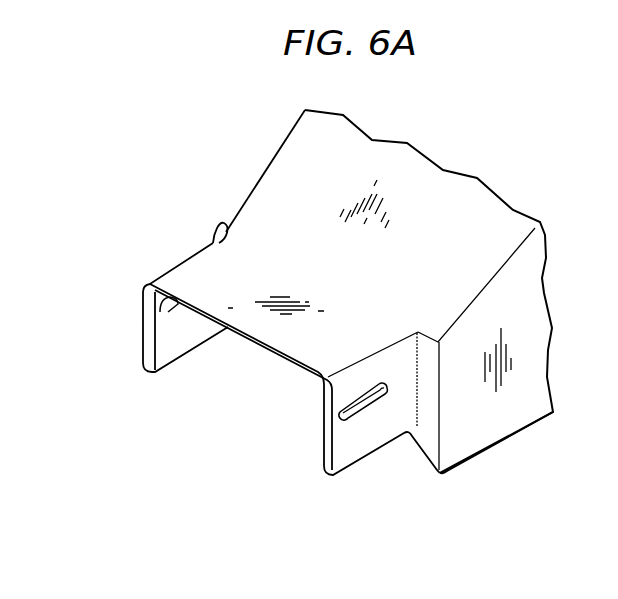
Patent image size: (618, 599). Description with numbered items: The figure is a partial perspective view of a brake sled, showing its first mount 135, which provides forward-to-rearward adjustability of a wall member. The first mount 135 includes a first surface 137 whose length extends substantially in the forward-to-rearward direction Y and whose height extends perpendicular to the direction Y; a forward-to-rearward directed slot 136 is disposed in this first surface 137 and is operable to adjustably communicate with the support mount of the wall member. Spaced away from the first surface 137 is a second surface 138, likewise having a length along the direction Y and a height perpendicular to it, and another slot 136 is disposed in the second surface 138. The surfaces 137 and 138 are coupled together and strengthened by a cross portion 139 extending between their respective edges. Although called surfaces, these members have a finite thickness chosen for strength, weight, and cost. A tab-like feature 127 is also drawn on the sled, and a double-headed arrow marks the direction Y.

The tab 127 is at (169, 241).
The first mount 135 is at (211, 431).
The slot 136 is at (160, 325).
The first surface 137 is at (372, 440).
The second surface 138 is at (122, 276).
The cross portion 139 is at (298, 290).
The forward-to-rearward direction Y is at (378, 553).